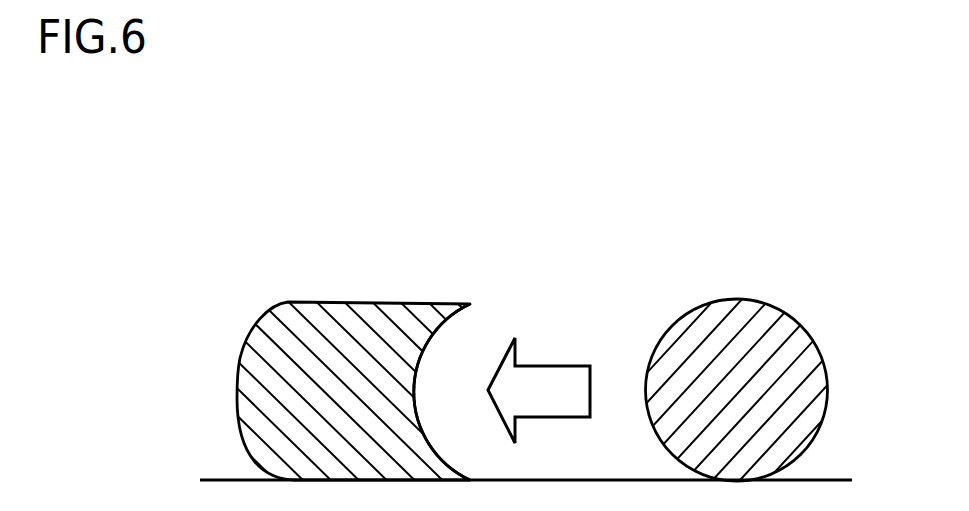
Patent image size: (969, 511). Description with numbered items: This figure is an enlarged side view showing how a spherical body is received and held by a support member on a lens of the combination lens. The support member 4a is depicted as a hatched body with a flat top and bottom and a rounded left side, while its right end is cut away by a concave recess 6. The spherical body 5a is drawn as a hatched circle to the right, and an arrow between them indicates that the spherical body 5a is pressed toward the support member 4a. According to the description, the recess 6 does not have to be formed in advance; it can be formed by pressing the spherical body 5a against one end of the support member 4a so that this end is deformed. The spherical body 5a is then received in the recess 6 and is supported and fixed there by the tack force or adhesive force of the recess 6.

The support member 4a is at (338, 314).
The recess 6 is at (415, 357).
The spherical body 5a is at (765, 320).